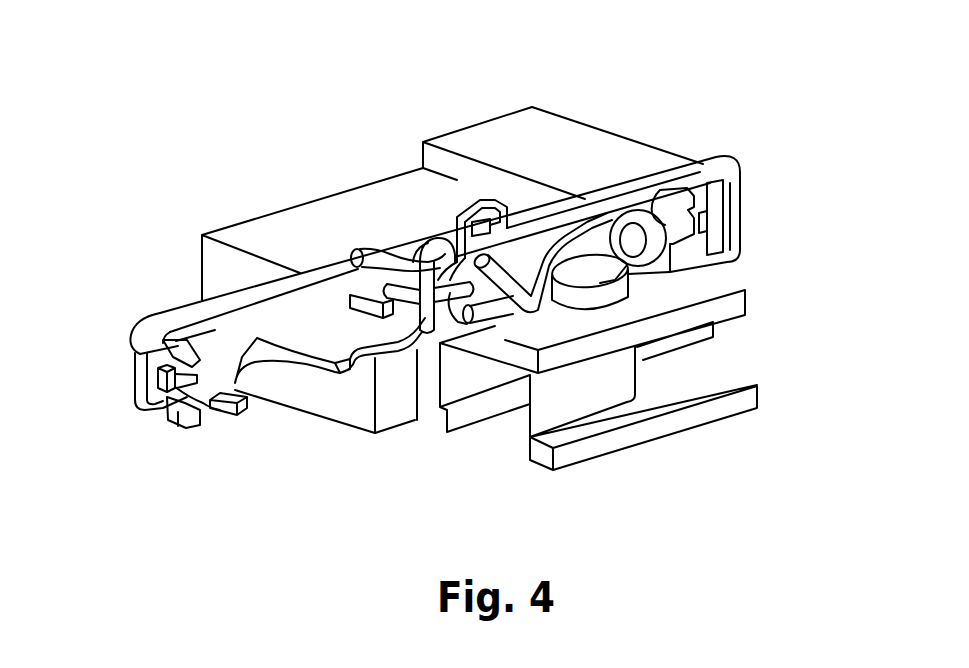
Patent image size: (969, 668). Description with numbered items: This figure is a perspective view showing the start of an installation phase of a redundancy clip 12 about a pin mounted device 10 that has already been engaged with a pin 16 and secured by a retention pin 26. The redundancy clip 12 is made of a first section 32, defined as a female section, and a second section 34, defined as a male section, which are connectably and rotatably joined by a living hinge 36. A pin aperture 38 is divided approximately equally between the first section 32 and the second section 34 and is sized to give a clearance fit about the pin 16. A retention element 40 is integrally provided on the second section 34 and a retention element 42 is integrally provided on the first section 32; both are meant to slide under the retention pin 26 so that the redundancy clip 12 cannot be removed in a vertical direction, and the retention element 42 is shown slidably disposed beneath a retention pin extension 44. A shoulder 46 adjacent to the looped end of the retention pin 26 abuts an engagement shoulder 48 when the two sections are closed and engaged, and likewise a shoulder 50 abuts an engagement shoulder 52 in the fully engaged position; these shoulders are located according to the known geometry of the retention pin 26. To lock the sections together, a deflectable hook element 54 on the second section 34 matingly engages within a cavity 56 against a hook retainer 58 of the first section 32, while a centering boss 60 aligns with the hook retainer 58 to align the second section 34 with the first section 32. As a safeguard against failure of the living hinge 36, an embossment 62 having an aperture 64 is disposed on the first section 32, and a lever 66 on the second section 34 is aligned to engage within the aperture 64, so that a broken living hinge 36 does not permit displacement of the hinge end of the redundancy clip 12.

The pin mounted device 10 is at (549, 128).
The redundancy clip 12 is at (121, 446).
The pin 16 is at (595, 256).
The retention pin 26 is at (648, 232).
The first section 32 is at (715, 163).
The second section 34 is at (298, 313).
The living hinge 36 is at (427, 305).
The pin aperture 38 is at (308, 363).
The retention element 40 is at (228, 413).
The retention element 42 is at (498, 330).
The retention pin extension 44 is at (486, 312).
The shoulder 46 is at (710, 250).
The engagement shoulder 48 is at (212, 413).
The shoulder 50 is at (452, 235).
The engagement shoulder 52 is at (396, 303).
The deflectable hook element 54 is at (167, 347).
The cavity 56 is at (718, 210).
The hook retainer 58 is at (705, 228).
The centering boss 60 is at (170, 397).
The embossment 62 is at (477, 224).
The aperture 64 is at (490, 225).
The lever 66 is at (413, 260).